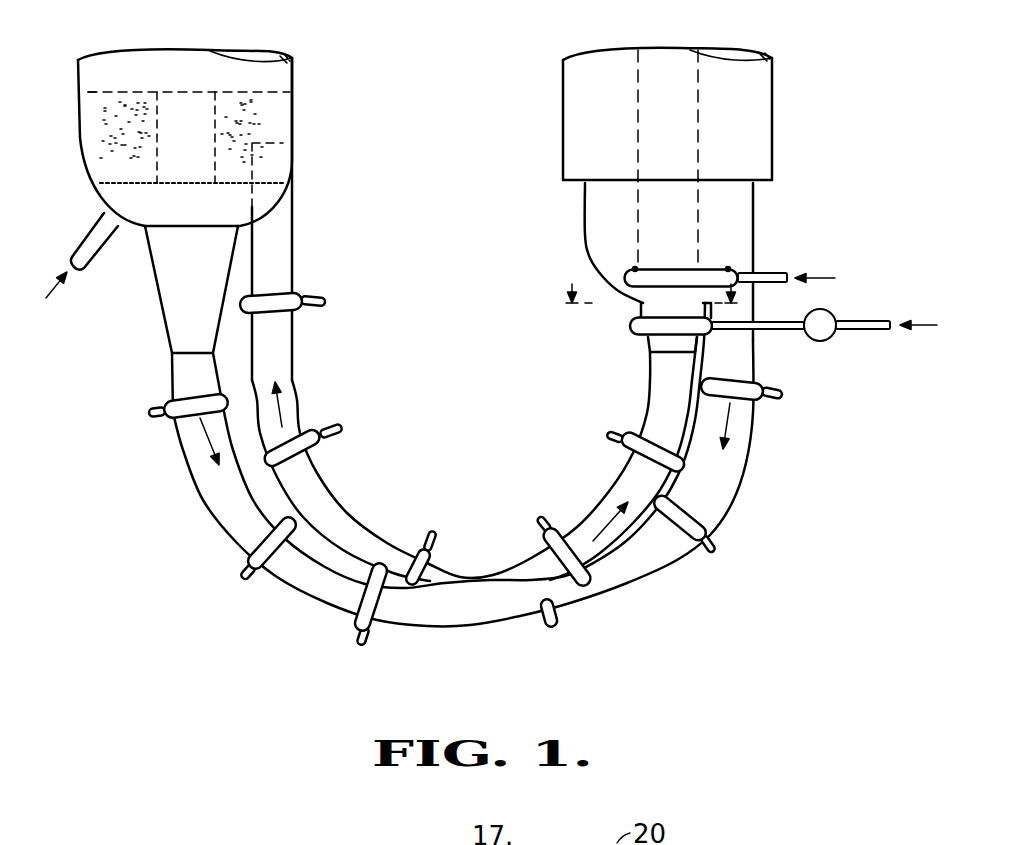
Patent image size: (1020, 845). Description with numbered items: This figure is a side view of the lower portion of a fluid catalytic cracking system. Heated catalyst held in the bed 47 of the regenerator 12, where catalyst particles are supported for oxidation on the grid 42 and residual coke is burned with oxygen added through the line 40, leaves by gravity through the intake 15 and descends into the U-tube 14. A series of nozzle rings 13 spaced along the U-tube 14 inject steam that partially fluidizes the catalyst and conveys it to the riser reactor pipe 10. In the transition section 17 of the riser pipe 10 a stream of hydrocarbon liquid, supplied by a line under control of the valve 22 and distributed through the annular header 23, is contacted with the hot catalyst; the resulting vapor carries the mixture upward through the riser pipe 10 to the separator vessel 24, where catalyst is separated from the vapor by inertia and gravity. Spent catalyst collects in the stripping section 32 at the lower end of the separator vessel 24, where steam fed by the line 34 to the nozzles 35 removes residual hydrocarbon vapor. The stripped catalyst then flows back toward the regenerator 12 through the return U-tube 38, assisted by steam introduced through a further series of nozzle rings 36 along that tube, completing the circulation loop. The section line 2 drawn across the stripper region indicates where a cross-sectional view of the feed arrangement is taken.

The riser reactor pipe 10 is at (585, 200).
The regenerator 12 is at (296, 112).
The nozzle rings 13 is at (357, 627).
The U-tube 14 is at (436, 626).
The intake 15 is at (182, 92).
The transition section 17 is at (660, 350).
The valve 22 is at (831, 313).
The annular header 23 is at (632, 330).
The separator vessel 24 is at (562, 100).
The section line 2- 2 is at (660, 297).
The stripping section 32 is at (755, 213).
The line 34 is at (768, 265).
The nozzles 35 is at (633, 268).
The nozzle rings 36 is at (324, 442).
The return U-tube 38 is at (663, 565).
The line 40 is at (72, 250).
The grid 42 is at (110, 198).
The bed 47 is at (88, 117).